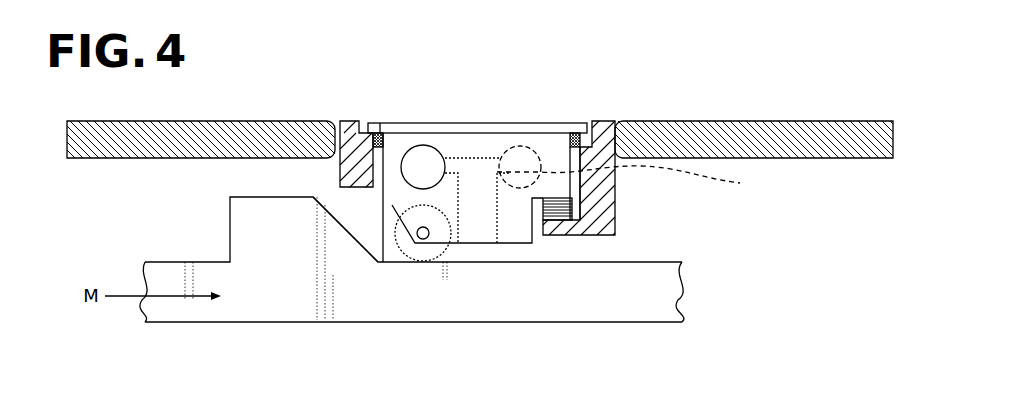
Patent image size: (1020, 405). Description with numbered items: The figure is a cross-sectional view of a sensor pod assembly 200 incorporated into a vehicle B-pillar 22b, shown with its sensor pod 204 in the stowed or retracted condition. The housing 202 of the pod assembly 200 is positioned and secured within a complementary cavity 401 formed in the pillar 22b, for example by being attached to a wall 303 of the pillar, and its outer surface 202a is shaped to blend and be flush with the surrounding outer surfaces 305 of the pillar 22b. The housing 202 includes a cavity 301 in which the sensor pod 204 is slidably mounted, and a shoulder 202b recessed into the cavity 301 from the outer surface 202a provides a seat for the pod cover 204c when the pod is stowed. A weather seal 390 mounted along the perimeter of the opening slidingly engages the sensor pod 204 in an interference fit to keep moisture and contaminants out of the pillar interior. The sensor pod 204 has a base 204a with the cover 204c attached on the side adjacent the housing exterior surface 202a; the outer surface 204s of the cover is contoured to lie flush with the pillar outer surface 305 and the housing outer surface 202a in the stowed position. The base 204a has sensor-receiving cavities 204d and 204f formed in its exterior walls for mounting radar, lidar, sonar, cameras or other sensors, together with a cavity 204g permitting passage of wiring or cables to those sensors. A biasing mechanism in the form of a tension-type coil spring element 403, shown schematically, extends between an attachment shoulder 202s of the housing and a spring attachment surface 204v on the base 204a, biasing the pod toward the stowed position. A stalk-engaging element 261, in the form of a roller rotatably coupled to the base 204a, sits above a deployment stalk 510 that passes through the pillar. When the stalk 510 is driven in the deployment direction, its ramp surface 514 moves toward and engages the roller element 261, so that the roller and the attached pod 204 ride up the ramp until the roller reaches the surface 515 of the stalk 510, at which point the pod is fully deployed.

The sensor pod assembly 200 is at (607, 108).
The housing 202 is at (594, 156).
The outer surface of the housing 202a is at (353, 120).
The shoulder 202b is at (375, 133).
The attachment shoulder 202s is at (556, 233).
The sensor pod 204 is at (457, 148).
The base 204a is at (392, 205).
The cover 204c is at (487, 130).
The cavity 204d is at (403, 172).
The cavity 204f is at (642, 180).
The cavity 204g is at (477, 220).
The outer surface of the cover 204s is at (517, 122).
The spring attachment surface 204v is at (533, 200).
The B-pillar 22b is at (767, 130).
The stalk-engaging element 261 is at (421, 253).
The cavity 301 is at (583, 192).
The wall of the pillar 303 is at (278, 150).
The outer surface of the pillar 305 is at (803, 123).
The weather seal 390 is at (376, 133).
The cavity 401 is at (335, 158).
The spring element 403 is at (562, 212).
The deployment stalk 510 is at (663, 285).
The ramp surface 514 is at (355, 239).
The surface of the stalk 515 is at (253, 198).